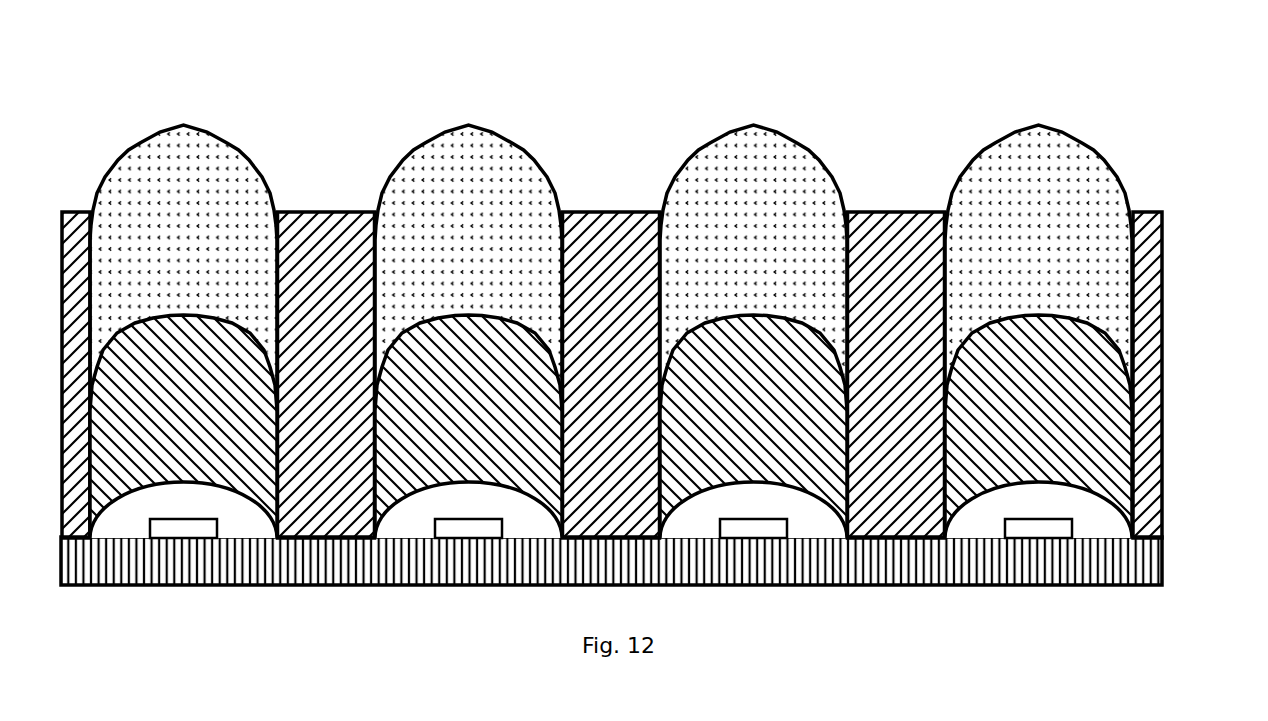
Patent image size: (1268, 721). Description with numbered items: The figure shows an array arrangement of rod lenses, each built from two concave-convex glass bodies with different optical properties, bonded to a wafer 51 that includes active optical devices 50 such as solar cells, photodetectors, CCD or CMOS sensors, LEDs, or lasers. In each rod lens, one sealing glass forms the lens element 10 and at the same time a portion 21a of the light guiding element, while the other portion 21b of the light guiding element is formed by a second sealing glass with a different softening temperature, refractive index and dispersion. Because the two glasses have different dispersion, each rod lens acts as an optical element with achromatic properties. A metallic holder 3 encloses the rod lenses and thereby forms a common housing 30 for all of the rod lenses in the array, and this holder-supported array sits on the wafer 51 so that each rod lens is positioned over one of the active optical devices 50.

The lens element 10 is at (1037, 167).
The metallic holder 3 is at (1153, 213).
The portion of the light guiding element 21a is at (1087, 297).
The other portion of the light guiding element 21b is at (1090, 448).
The common housing 30 is at (318, 200).
The active optical devices 50 is at (1063, 530).
The wafer 51 is at (1030, 560).